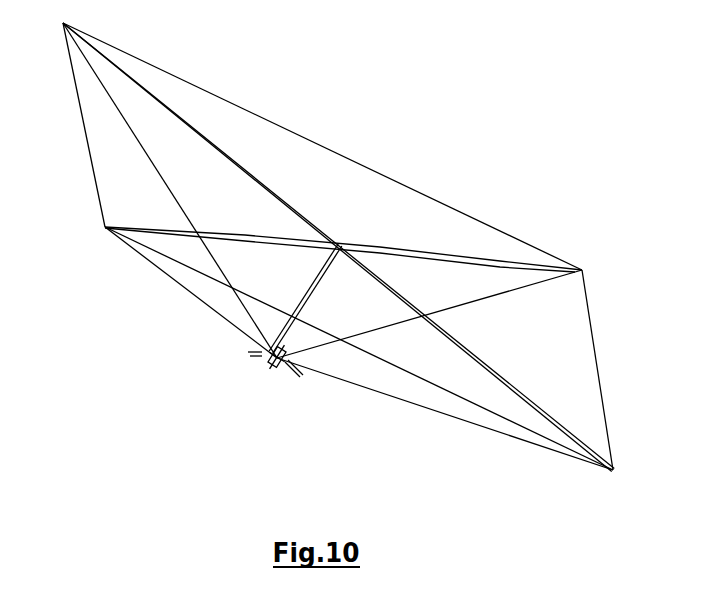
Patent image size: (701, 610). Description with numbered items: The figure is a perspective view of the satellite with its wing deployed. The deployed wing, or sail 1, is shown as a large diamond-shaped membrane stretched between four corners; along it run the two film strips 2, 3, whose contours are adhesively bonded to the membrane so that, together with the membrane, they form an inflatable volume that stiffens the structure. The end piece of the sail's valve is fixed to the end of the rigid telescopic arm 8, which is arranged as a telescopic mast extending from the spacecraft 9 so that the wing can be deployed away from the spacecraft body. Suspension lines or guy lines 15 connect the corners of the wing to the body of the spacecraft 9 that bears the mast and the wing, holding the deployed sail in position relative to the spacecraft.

The kite 1 is at (348, 185).
The film strip 2 is at (182, 116).
The film strip 3 is at (137, 228).
The rigid telescopic arm 8 is at (303, 330).
The spacecraft 9 is at (262, 365).
The suspension lines or guy lines 15 is at (417, 408).